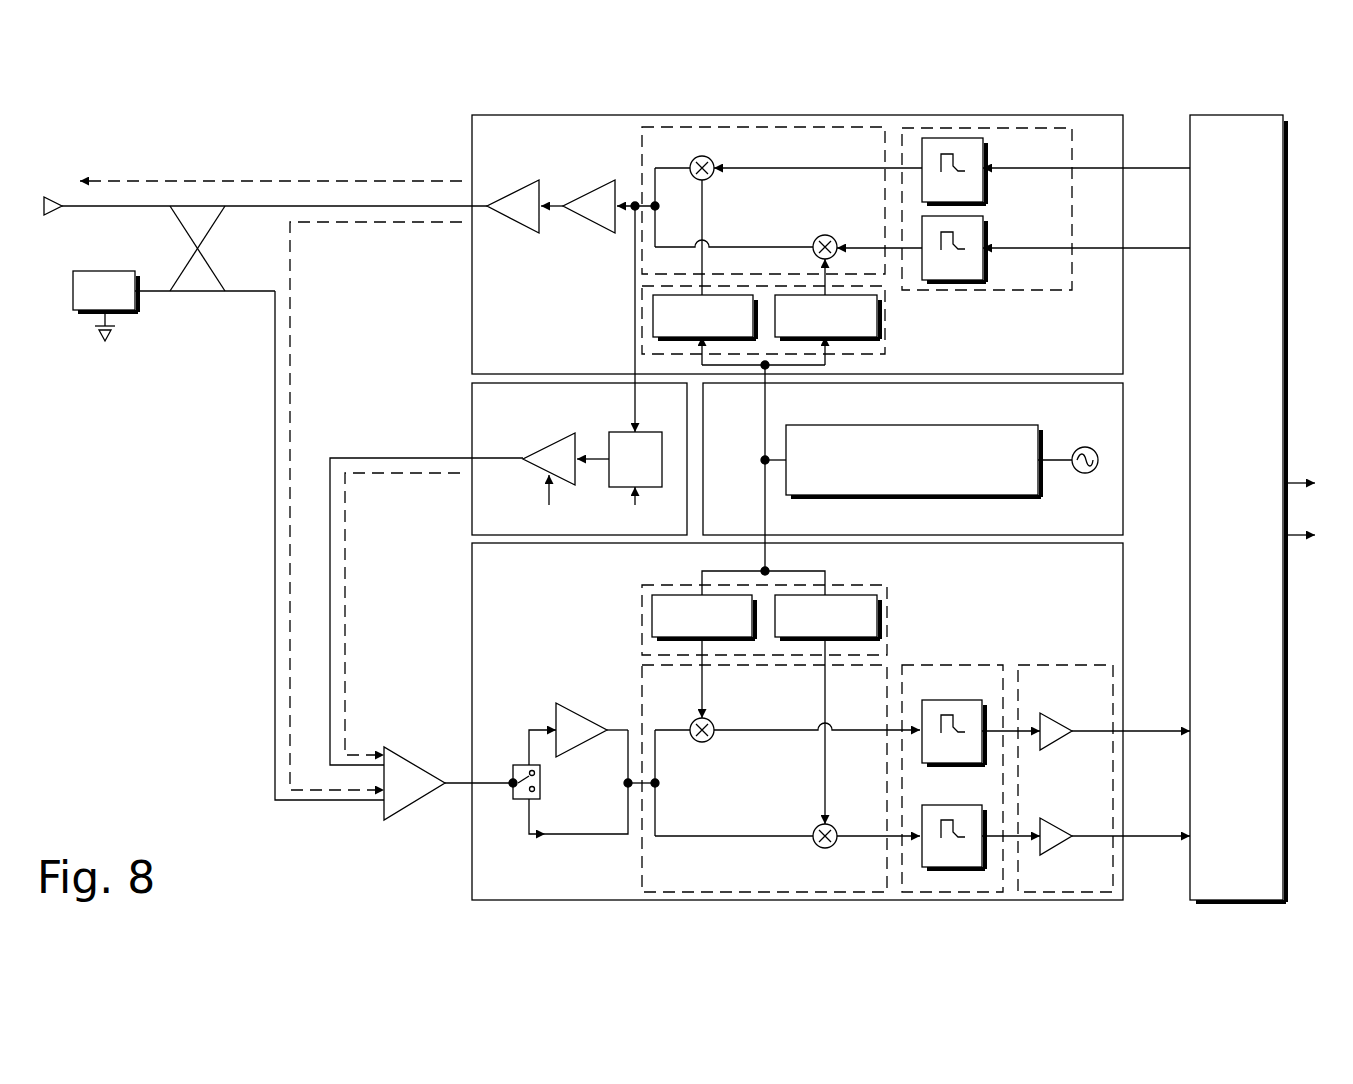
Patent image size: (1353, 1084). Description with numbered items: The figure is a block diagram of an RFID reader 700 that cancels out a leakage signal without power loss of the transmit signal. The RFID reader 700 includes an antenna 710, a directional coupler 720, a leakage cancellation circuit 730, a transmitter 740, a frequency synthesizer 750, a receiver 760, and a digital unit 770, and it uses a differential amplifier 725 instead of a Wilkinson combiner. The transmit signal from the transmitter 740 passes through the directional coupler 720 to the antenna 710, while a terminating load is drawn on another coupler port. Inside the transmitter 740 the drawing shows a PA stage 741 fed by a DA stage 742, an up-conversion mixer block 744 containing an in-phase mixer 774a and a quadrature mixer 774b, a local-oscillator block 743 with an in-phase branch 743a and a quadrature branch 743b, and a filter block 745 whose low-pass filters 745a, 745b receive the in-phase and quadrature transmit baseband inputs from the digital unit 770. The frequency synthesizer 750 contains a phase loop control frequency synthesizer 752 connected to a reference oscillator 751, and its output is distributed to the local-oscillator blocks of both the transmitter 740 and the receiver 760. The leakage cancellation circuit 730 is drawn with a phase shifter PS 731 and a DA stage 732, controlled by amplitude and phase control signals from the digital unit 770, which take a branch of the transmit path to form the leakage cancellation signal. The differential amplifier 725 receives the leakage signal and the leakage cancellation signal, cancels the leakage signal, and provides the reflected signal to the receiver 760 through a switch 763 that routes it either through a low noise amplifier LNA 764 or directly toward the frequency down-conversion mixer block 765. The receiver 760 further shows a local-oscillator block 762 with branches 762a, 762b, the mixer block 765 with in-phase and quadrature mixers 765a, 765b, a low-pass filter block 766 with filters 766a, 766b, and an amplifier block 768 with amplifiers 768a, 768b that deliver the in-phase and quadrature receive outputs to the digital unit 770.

The RFID reader 700 is at (410, 94).
The antenna 710 is at (56, 197).
The directional coupler 720 is at (199, 200).
The differential amplifier 725 is at (407, 757).
The leakage cancellation circuit 730 is at (516, 417).
The phase shifter 731 is at (650, 432).
The driver amplifier 732 is at (552, 440).
The transmitter 740 is at (615, 168).
The power amplifier 741 is at (512, 222).
The driver amplifier 742 is at (588, 222).
The local oscillator signal generator 743 is at (887, 352).
The in-phase LO buffer 743a is at (653, 318).
The quadrature LO buffer 743b is at (877, 318).
The up-conversion mixer unit 744 is at (846, 127).
The transmit low pass filter unit 745 is at (1028, 128).
The in-phase low pass filter 745a is at (986, 186).
The quadrature low pass filter 745b is at (986, 264).
The frequency synthesizer 750 is at (747, 417).
The reference oscillator 751 is at (1086, 447).
The phase loop control frequency synthesizer 752 is at (985, 425).
The receiver 760 is at (483, 578).
The receive LO signal generator 762 is at (877, 582).
The in-phase LO buffer 762a is at (652, 616).
The quadrature LO buffer 762b is at (877, 616).
The switch 763 is at (515, 763).
The low noise amplifier 764 is at (584, 752).
The frequency down-conversion mixer 765 is at (642, 686).
The in-phase mixer 765a is at (712, 720).
The quadrature mixer 765b is at (815, 826).
The receive low pass filter unit 766 is at (980, 665).
The in-phase low pass filter 766a is at (935, 700).
The quadrature low pass filter 766b is at (935, 805).
The baseband amplifier unit 768 is at (1074, 665).
The in-phase baseband amplifier 768a is at (1058, 720).
The quadrature baseband amplifier 768b is at (1058, 826).
The digital unit 770 is at (1254, 115).
The in-phase up-conversion mixer 774a is at (712, 160).
The quadrature up-conversion mixer 774b is at (816, 238).